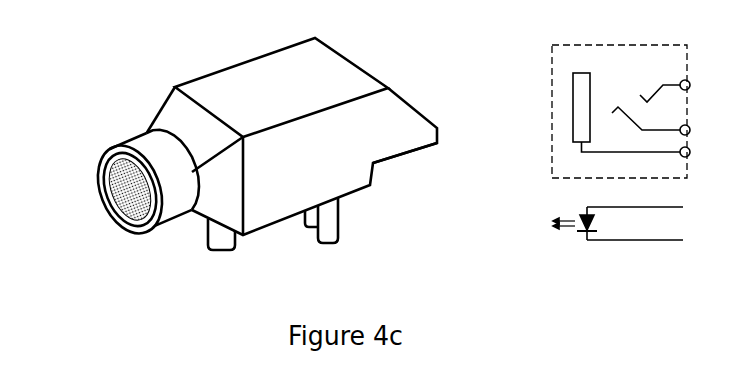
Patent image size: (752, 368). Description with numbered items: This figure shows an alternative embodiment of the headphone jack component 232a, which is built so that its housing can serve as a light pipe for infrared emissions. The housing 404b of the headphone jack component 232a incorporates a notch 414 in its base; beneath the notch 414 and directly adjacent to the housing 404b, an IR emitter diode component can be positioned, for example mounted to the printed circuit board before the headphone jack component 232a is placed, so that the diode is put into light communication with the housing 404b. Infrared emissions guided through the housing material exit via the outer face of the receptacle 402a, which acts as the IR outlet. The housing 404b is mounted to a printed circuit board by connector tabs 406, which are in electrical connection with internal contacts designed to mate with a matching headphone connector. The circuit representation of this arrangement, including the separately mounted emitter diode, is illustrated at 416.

The headphone jack component 232a is at (241, 165).
The receptacle 402a is at (116, 143).
The housing 404b is at (356, 64).
The connector tabs 406 is at (315, 233).
The notch 414 is at (403, 170).
The circuit representation 416 is at (648, 271).